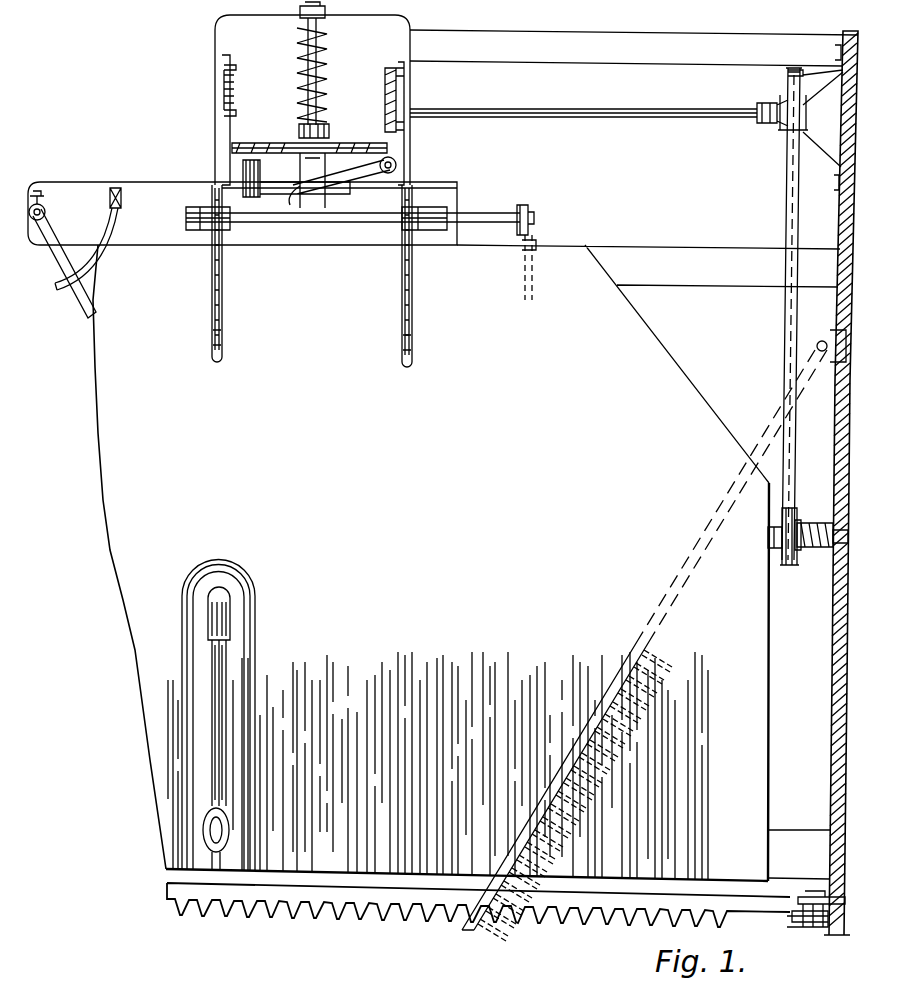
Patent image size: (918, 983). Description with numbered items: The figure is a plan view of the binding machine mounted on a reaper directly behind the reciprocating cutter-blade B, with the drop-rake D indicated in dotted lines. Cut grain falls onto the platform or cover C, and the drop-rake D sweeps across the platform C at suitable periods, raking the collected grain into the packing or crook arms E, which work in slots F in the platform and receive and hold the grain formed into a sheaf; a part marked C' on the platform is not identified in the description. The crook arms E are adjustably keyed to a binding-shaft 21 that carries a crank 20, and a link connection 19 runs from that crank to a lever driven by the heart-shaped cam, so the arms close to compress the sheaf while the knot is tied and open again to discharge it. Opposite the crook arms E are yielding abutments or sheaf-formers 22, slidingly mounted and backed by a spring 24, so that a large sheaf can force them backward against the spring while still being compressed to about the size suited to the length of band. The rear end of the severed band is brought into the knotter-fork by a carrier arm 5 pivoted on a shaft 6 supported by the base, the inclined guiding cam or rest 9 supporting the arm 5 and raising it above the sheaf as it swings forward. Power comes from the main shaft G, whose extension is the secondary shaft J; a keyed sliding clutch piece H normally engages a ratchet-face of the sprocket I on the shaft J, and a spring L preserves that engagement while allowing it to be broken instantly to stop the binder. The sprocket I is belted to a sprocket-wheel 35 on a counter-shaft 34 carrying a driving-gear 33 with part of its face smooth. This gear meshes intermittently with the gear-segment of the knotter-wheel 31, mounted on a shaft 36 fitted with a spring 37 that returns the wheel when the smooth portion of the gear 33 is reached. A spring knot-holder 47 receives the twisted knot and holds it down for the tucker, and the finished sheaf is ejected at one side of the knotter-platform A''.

The knotter-platform A'' is at (251, 100).
The spring 24 is at (232, 95).
The shaft 36 is at (320, 60).
The spring 37 is at (322, 80).
The driving-gear 33 is at (384, 92).
The knotter-wheel 31 is at (282, 143).
The spring knot-holder 47 is at (352, 191).
The counter-shaft 34 is at (583, 104).
The sprocket-wheel 35 is at (800, 118).
The yielding abutments or sheaf-formers 22 is at (214, 205).
The binding-shaft 21 is at (500, 218).
The crank 20 is at (529, 208).
The link connection 19 is at (536, 270).
The shaft 6 is at (46, 209).
The carrier arm 5 is at (60, 262).
The guiding cam or rest 9 is at (110, 226).
The packing or crook arms E is at (222, 306).
The slots F is at (222, 350).
The keyed sliding piece H is at (810, 522).
The spring L is at (805, 548).
The main shaft G is at (833, 546).
The sprocket I is at (788, 565).
The secondary shaft J is at (768, 548).
The drop-rake D is at (632, 641).
The platform or cover C is at (438, 766).
The float C' is at (231, 716).
The cutter-blade B is at (506, 912).